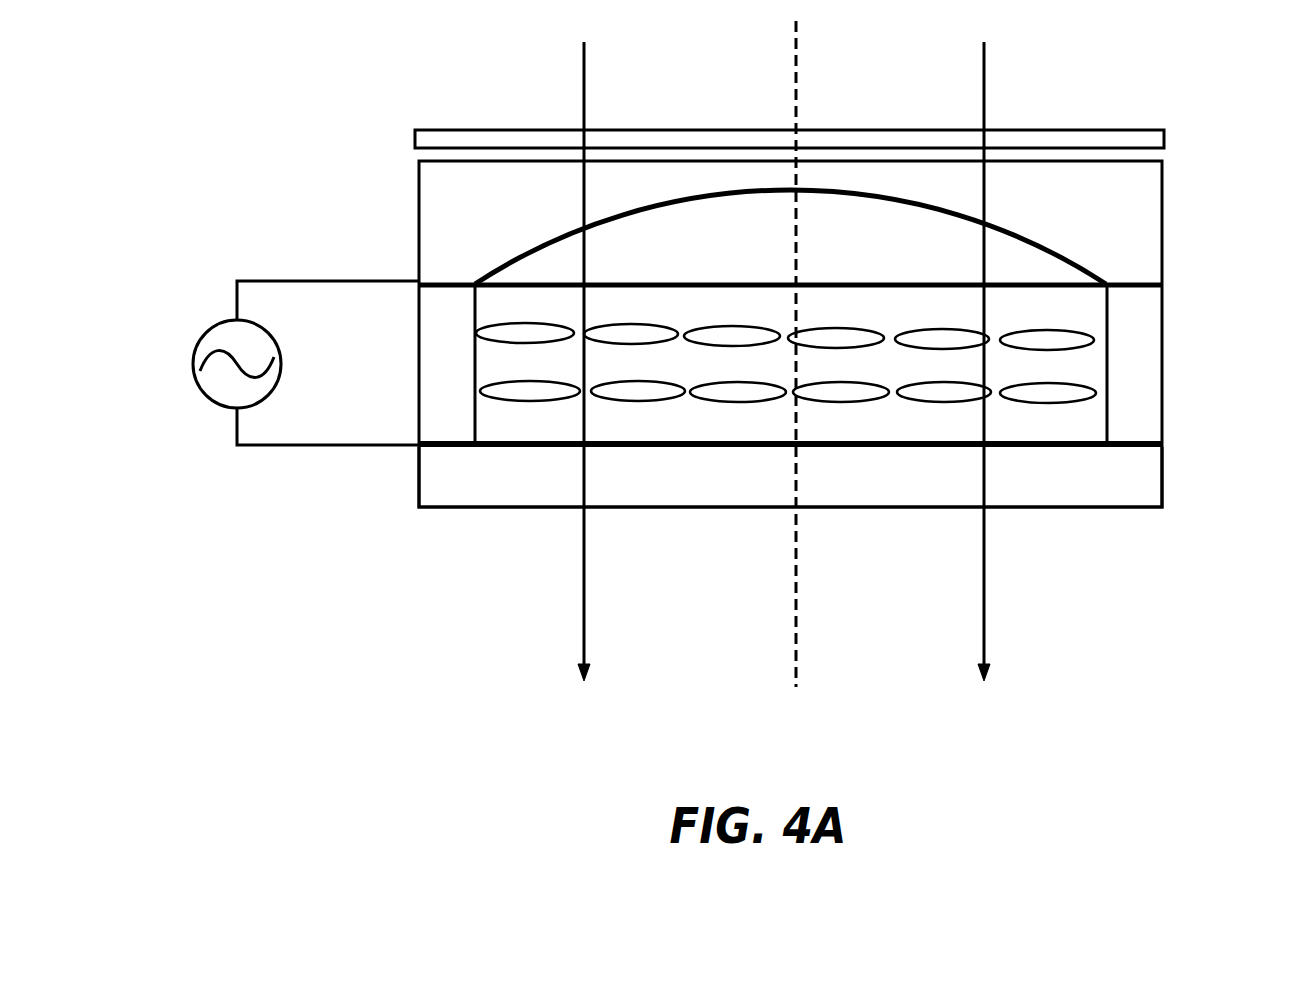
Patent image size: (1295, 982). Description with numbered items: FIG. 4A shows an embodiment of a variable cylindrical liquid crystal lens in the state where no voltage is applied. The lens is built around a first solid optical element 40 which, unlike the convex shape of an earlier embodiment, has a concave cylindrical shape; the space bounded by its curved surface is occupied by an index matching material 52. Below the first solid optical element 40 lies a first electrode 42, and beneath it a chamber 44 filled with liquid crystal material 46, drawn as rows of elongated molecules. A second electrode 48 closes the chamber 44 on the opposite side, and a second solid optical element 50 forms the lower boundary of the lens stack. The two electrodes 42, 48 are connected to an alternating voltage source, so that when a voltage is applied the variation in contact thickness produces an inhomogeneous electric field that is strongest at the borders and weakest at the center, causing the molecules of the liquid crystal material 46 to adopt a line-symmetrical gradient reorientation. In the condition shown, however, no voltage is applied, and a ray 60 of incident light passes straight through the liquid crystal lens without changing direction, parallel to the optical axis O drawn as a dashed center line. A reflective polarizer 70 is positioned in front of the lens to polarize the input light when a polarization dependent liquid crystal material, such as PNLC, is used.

The first solid optical element 40 is at (1142, 243).
The first electrode 42 is at (1160, 283).
The chamber 44 is at (1148, 342).
The liquid crystal material 46 is at (1055, 406).
The second electrode 48 is at (1133, 449).
The second solid optical element 50 is at (952, 484).
The index matching material 52 is at (674, 248).
The ray 60 is at (584, 604).
The polarizer 70 is at (1107, 133).
The optical axis O is at (796, 653).